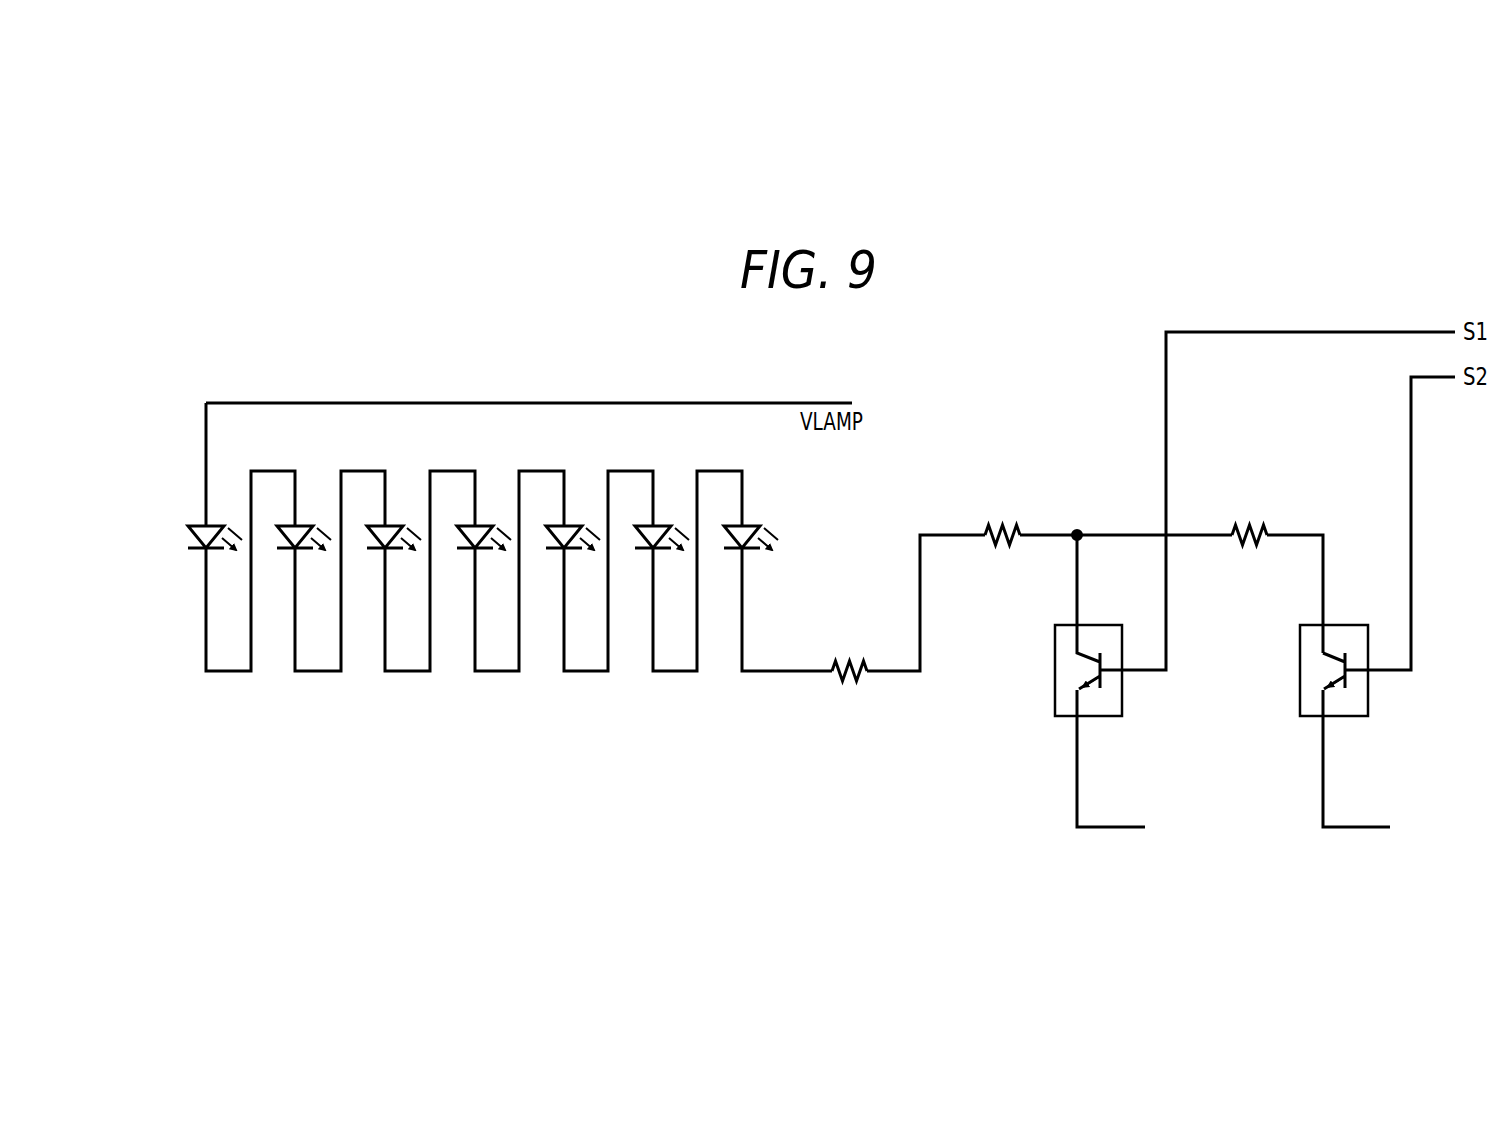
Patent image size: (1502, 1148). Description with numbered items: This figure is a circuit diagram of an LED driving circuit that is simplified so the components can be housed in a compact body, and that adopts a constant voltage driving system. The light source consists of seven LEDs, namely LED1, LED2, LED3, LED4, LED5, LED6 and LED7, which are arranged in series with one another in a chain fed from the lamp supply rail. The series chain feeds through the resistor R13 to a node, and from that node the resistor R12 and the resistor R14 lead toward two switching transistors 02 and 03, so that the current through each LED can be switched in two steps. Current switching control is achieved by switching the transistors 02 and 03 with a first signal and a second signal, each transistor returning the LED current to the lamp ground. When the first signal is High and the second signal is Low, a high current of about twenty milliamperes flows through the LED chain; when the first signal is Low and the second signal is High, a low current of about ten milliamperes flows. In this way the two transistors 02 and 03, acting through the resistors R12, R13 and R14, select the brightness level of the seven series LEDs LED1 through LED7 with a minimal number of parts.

The LED LED1 is at (206, 471).
The LED LED2 is at (300, 572).
The LED LED3 is at (390, 572).
The LED LED4 is at (480, 572).
The LED LED5 is at (569, 572).
The LED LED6 is at (658, 572).
The LED LED7 is at (747, 572).
The resistor 220 ohm 1/10W R12 is at (1005, 521).
The resistor 220 ohm 1/10W R13 is at (849, 657).
The resistor 430 ohm 1/10W R14 is at (1250, 521).
The switching transistor 02 is at (1126, 681).
The switching transistor 03 is at (1372, 708).